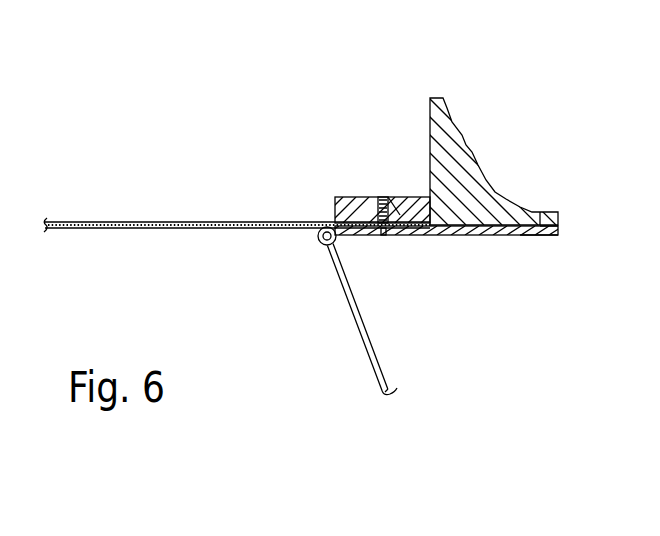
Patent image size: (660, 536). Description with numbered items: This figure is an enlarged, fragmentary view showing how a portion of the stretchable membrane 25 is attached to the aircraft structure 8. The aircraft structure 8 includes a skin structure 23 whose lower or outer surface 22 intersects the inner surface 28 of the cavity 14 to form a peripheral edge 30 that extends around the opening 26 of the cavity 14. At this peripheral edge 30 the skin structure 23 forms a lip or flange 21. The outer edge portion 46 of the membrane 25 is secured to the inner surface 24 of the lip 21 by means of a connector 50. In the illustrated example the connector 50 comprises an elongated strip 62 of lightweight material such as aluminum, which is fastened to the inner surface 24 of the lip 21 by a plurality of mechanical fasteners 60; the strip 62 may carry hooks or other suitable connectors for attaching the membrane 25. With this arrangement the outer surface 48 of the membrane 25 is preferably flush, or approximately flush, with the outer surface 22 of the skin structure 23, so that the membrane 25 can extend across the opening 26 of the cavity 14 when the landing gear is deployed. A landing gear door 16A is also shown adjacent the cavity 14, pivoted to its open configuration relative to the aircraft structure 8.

The cavity 14 is at (192, 140).
The membrane 25 is at (126, 230).
The outer surface of membrane 48 is at (243, 230).
The inner surface of cavity 28 is at (430, 121).
The inner surface of flange 24 is at (372, 213).
The elongated strip 62 is at (401, 205).
The outer edge portion of membrane 46 is at (398, 197).
The lower surface of skin structure 22 is at (450, 235).
The mechanical fasteners 60 is at (387, 237).
The skin structure 23 is at (543, 236).
The aircraft structure 8 is at (527, 233).
The opening 26 is at (278, 230).
The lip 21 is at (347, 240).
The door 16A is at (371, 399).
The peripheral edge 30 is at (279, 302).
The connector 50 is at (320, 150).